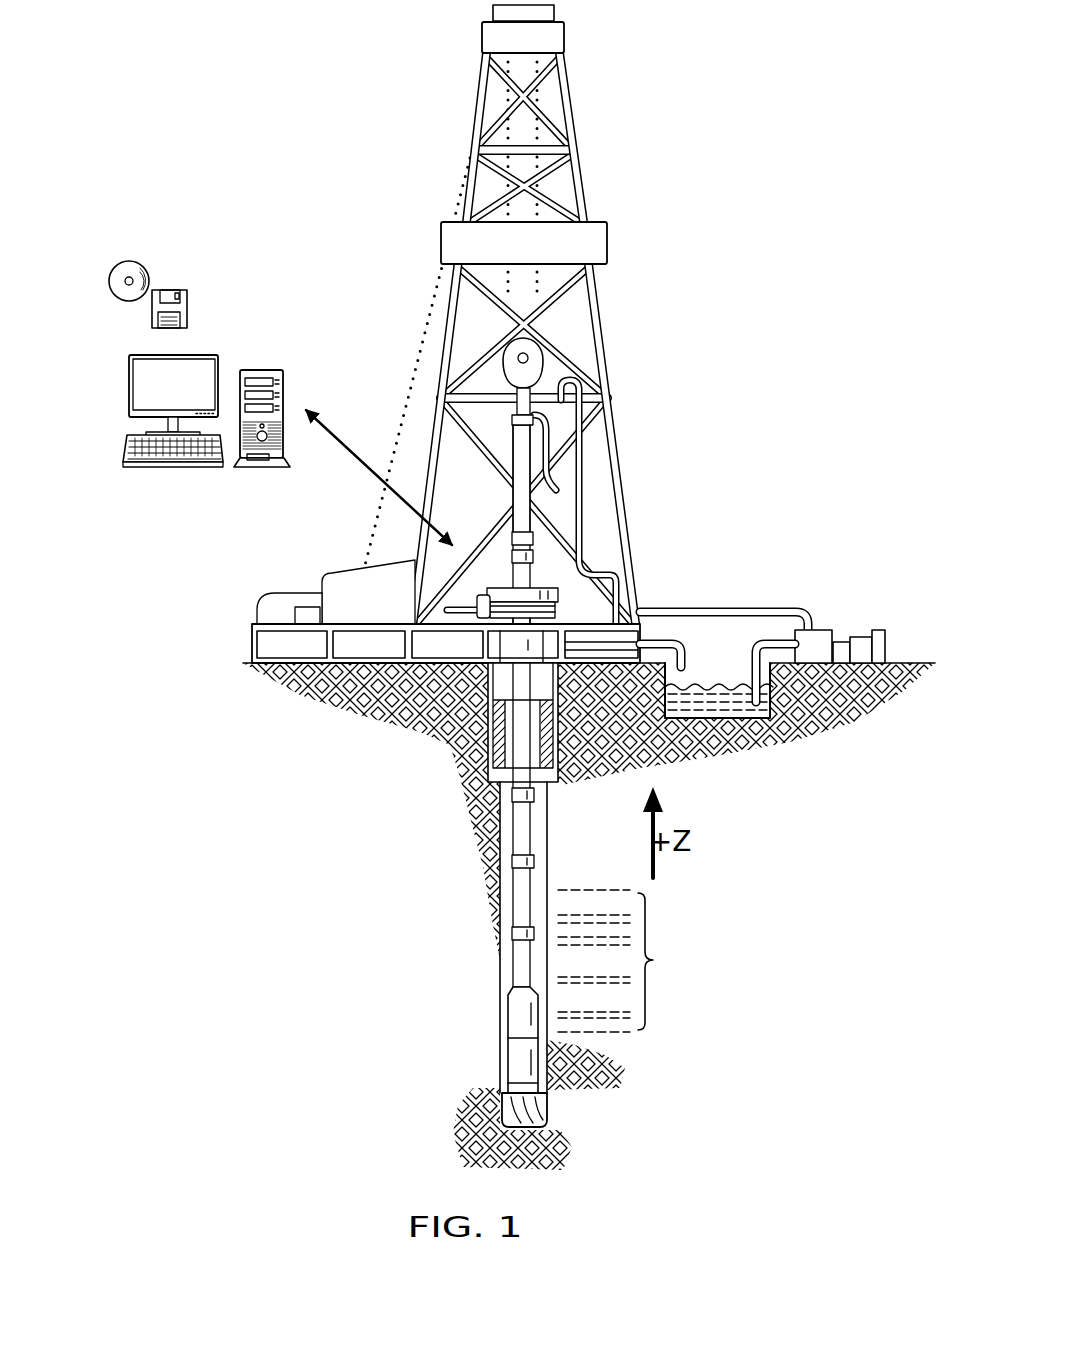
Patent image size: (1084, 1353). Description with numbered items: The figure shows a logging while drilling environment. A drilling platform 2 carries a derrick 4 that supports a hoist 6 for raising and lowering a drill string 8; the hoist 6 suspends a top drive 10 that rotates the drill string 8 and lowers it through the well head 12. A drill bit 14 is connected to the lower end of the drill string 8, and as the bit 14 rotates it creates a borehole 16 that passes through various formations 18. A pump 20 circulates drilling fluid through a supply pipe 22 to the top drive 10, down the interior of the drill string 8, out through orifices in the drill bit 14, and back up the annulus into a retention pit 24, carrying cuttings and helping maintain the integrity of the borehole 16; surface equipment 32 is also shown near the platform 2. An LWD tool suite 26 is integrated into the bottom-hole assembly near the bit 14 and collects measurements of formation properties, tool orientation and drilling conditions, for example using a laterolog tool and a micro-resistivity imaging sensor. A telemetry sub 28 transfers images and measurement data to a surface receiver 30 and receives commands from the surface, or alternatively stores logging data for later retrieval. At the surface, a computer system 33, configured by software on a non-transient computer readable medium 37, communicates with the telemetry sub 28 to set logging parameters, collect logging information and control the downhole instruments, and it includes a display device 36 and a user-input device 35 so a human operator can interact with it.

The drilling platform 2 is at (252, 645).
The derrick 4 is at (582, 132).
The hoist 6 is at (543, 367).
The drill string 8 is at (531, 828).
The top drive 10 is at (510, 437).
The well head 12 is at (500, 585).
The drill bit 14 is at (549, 1098).
The borehole 16 is at (549, 848).
The formations 18 is at (624, 961).
The pump 20 is at (818, 630).
The supply pipe 22 is at (718, 606).
The retention pit 24 is at (703, 694).
The LWD tool suite 26 is at (498, 1064).
The telemetry sub 28 is at (508, 1017).
The surface receiver 30 is at (534, 538).
The mud pump 32 is at (310, 607).
The computer system 33 is at (262, 368).
The user-input device 35 is at (172, 467).
The display device 36 is at (129, 387).
The non-transient computer readable medium 37 is at (168, 290).